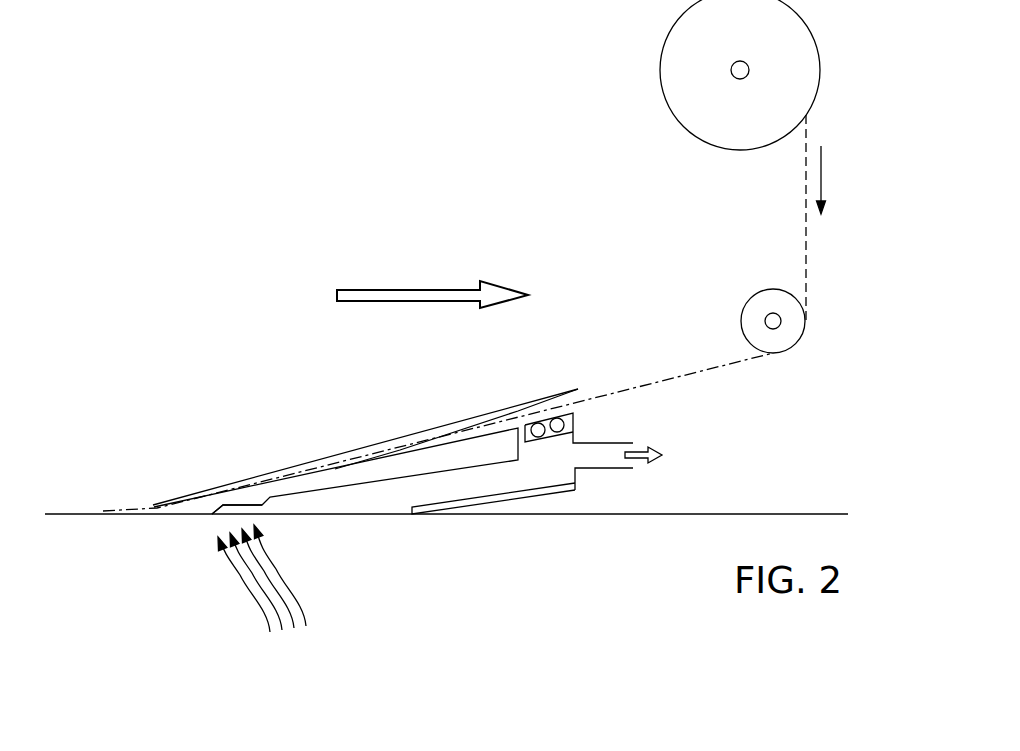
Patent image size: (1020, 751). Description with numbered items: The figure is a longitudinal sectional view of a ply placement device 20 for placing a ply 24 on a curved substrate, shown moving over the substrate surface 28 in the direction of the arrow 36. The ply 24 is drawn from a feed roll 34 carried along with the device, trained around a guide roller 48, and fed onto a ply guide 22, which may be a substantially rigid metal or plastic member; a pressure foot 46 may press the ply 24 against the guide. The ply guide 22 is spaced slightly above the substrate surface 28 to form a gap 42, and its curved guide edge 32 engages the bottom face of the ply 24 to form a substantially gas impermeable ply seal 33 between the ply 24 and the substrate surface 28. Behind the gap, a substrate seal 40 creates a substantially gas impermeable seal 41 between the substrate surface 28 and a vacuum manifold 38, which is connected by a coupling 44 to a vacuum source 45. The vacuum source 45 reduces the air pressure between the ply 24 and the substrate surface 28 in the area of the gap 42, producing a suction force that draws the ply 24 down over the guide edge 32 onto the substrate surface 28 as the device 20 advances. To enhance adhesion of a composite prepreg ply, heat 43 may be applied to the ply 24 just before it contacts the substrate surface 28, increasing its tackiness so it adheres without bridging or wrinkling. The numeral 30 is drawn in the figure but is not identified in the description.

The ply placement device 20 is at (511, 489).
The ply guide 22 is at (415, 466).
The ply 24 is at (806, 245).
The substrate surface 28 is at (822, 513).
The guide surface 30 is at (458, 432).
The guide edge 32 is at (267, 493).
The ply seal 33 is at (213, 519).
The feed roll 34 is at (805, 60).
The arrow 36 is at (407, 298).
The vacuum manifold 38 is at (548, 472).
The substrate seal 40 is at (491, 497).
The seal 41 is at (408, 530).
The gap 42 is at (245, 505).
The heat 43 is at (264, 590).
The coupling 44 is at (602, 455).
The vacuum source 45 is at (780, 455).
The pressure foot 46 is at (292, 467).
The guide roller 48 is at (741, 318).